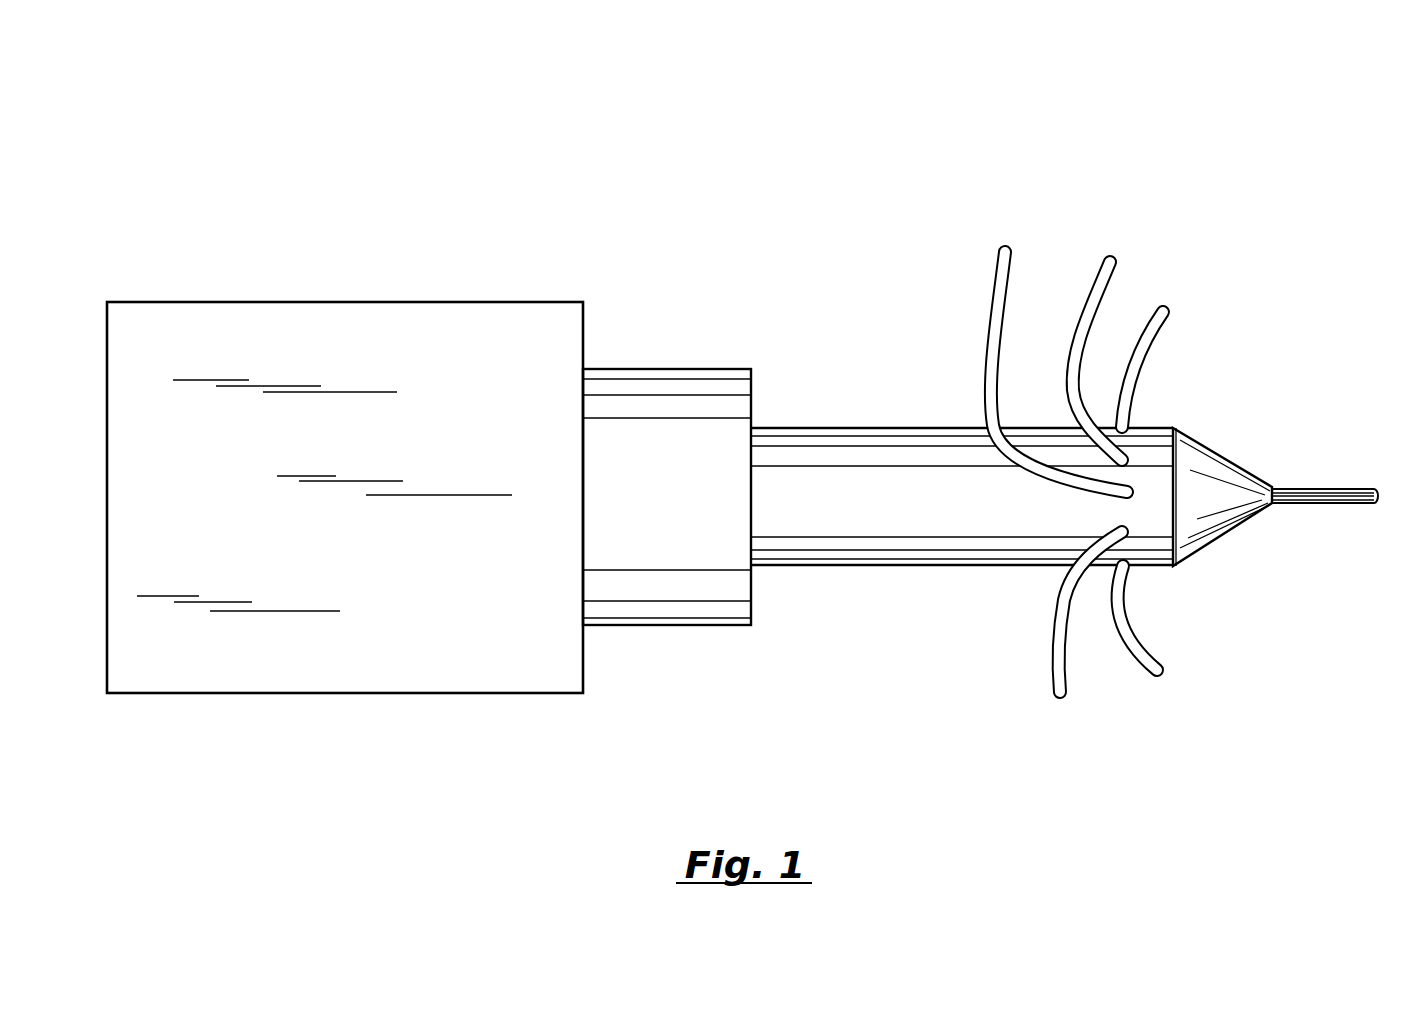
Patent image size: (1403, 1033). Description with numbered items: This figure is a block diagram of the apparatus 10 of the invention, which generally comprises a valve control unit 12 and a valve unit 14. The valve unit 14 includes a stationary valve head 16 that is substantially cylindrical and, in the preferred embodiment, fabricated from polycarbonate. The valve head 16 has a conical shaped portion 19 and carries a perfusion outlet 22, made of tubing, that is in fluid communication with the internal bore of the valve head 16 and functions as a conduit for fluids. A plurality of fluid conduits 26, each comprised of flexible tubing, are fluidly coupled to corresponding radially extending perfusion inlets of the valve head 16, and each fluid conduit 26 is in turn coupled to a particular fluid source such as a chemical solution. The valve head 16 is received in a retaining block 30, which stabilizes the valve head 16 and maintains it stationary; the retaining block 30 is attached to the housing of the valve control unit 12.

The apparatus 10 is at (458, 103).
The valve control unit 12 is at (370, 310).
The valve unit 14 is at (992, 116).
The valve head 16 is at (832, 435).
The conical shaped portion 19 is at (1220, 468).
The perfusion outlet 22 is at (1328, 498).
The fluid conduit 26 is at (992, 313).
The retaining block 30 is at (642, 380).